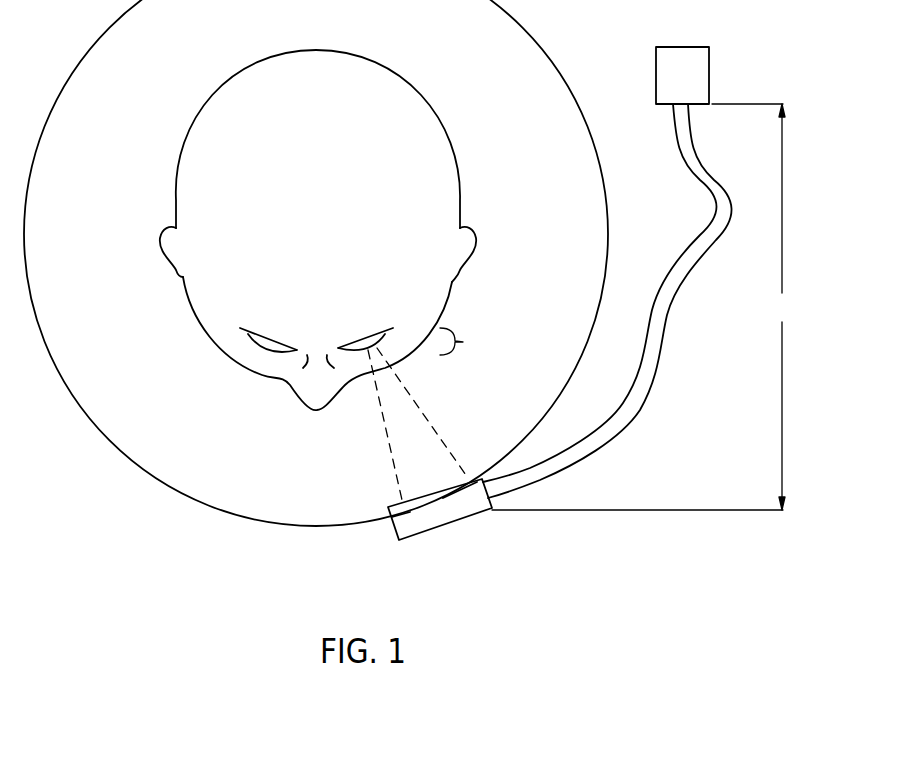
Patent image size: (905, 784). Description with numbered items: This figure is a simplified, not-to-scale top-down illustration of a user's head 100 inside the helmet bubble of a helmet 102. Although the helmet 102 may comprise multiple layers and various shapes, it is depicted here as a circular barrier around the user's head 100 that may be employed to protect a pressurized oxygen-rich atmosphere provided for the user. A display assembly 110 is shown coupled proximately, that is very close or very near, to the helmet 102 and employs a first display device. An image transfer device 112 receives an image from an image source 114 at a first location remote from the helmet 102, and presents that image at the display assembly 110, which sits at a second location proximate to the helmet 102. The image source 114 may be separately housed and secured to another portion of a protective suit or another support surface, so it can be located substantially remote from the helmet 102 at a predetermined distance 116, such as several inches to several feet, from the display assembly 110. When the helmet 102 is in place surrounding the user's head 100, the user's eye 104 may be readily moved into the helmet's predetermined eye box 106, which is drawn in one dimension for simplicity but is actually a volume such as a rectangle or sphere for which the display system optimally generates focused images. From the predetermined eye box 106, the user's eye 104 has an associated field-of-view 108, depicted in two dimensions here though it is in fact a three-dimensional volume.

The user's head 100 is at (245, 72).
The helmet 102 is at (92, 47).
The user's eye 104 is at (365, 335).
The predetermined eye box 106 is at (474, 342).
The field-of-view 108 is at (402, 460).
The display assembly 110 is at (462, 523).
The image transfer device 112 is at (655, 392).
The image source 114 is at (680, 47).
The predetermined distance 116 is at (647, 307).